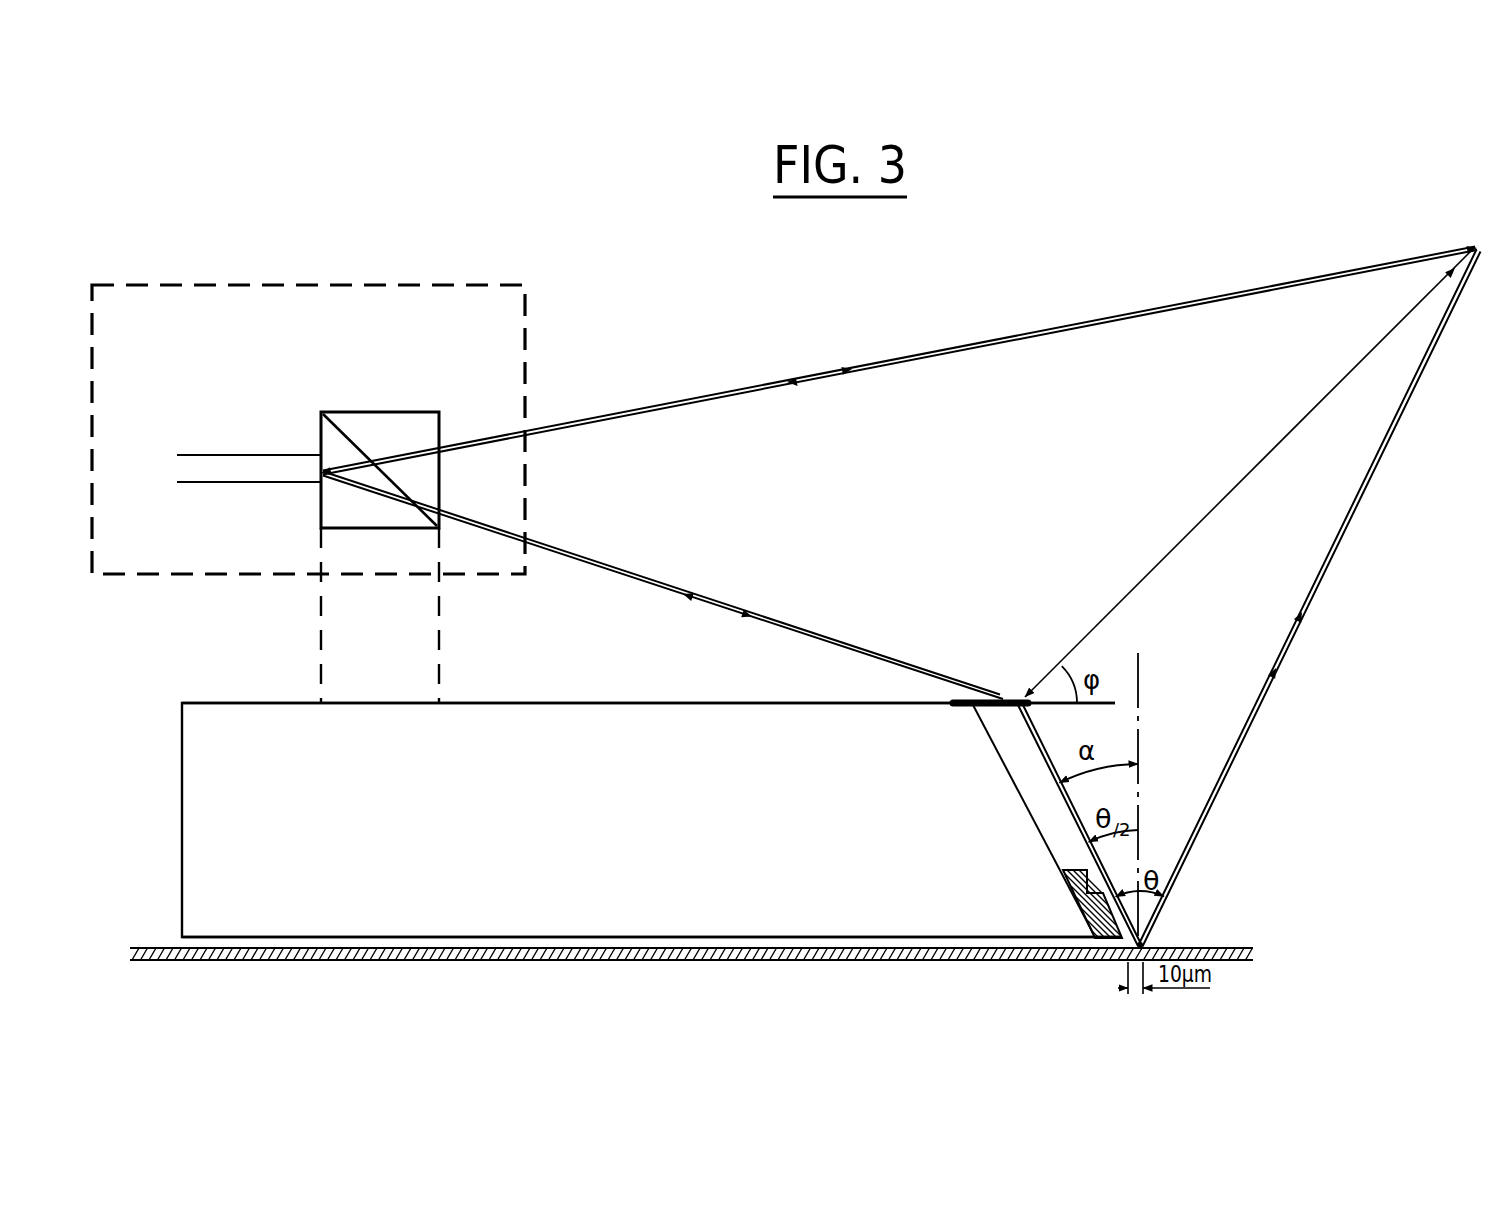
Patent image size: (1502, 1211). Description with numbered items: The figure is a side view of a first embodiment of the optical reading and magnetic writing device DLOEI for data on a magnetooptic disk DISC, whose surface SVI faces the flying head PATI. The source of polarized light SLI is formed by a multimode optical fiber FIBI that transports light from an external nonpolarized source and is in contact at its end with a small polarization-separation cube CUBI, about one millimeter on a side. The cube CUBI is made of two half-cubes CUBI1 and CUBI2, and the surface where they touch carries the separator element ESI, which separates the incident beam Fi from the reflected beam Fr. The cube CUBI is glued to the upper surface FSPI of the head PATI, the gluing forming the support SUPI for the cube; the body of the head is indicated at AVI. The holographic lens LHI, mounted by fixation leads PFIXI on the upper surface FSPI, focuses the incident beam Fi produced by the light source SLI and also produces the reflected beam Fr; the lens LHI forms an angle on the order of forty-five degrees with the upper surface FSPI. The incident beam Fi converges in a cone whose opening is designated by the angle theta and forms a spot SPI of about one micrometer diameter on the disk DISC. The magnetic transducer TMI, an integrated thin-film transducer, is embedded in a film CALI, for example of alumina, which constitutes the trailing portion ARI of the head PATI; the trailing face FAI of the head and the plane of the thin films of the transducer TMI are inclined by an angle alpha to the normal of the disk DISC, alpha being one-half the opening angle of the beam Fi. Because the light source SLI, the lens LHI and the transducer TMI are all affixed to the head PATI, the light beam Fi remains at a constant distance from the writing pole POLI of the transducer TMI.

The source of polarized light SLI is at (400, 284).
The optical reading and magnetic writing device DLOEI is at (582, 302).
The cube CUBI is at (393, 400).
The first half-cube CUBI1 is at (335, 500).
The second half-cube CUBI2 is at (350, 423).
The separator element ESI is at (417, 510).
The optical fiber FIBI is at (213, 470).
The support for the cube SUPI is at (440, 607).
The slider body AVI is at (182, 872).
The upper surface of the head FSPI is at (526, 705).
The flying head PATI is at (435, 900).
The magnetooptic disk DISC is at (793, 962).
The disc surface SVI is at (660, 937).
The holographic lens LHI is at (1383, 338).
The incident beam Fi is at (901, 598).
The reflected beam Fr is at (1021, 481).
The fixation leads PFIXI is at (965, 710).
The film CALI is at (1020, 752).
The trailing face FAI is at (1068, 814).
The magnetic transducer TMI is at (1073, 957).
The trailing portion of the head ARI is at (1162, 706).
The spot SPI is at (1147, 942).
The writing pole POLI is at (1102, 960).